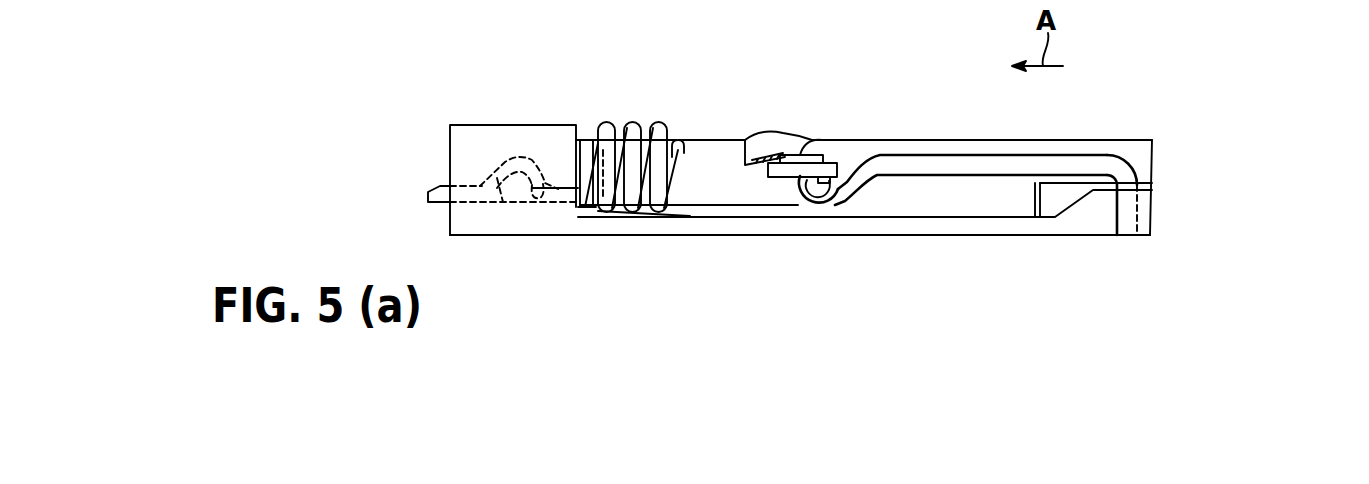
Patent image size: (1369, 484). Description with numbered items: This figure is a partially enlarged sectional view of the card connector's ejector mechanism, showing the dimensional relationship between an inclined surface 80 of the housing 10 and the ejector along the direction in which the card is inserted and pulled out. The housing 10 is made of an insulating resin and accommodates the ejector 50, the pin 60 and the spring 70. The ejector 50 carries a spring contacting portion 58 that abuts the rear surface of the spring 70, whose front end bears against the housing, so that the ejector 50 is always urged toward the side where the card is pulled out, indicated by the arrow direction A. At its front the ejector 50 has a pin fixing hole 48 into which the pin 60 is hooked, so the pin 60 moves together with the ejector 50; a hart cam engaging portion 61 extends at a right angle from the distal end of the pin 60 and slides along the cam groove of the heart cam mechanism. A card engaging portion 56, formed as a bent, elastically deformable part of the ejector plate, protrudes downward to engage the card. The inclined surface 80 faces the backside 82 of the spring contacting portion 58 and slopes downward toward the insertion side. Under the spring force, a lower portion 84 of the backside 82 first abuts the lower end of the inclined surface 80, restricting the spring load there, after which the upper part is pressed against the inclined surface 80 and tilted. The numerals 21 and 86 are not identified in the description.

The housing 10 is at (471, 133).
The base plate 21 is at (898, 217).
The pin fixing hole 48 is at (801, 153).
The ejector 50 is at (713, 178).
The card engaging portion 56 is at (503, 203).
The spring contacting portion 58 is at (603, 150).
The pin 60 is at (952, 160).
The hart cam engaging portion 61 is at (1128, 220).
The spring 70 is at (660, 122).
The inclined surface 80 is at (569, 138).
The backside 82 is at (577, 165).
The lower portion 84 is at (578, 210).
The plate top edge 86 is at (588, 140).